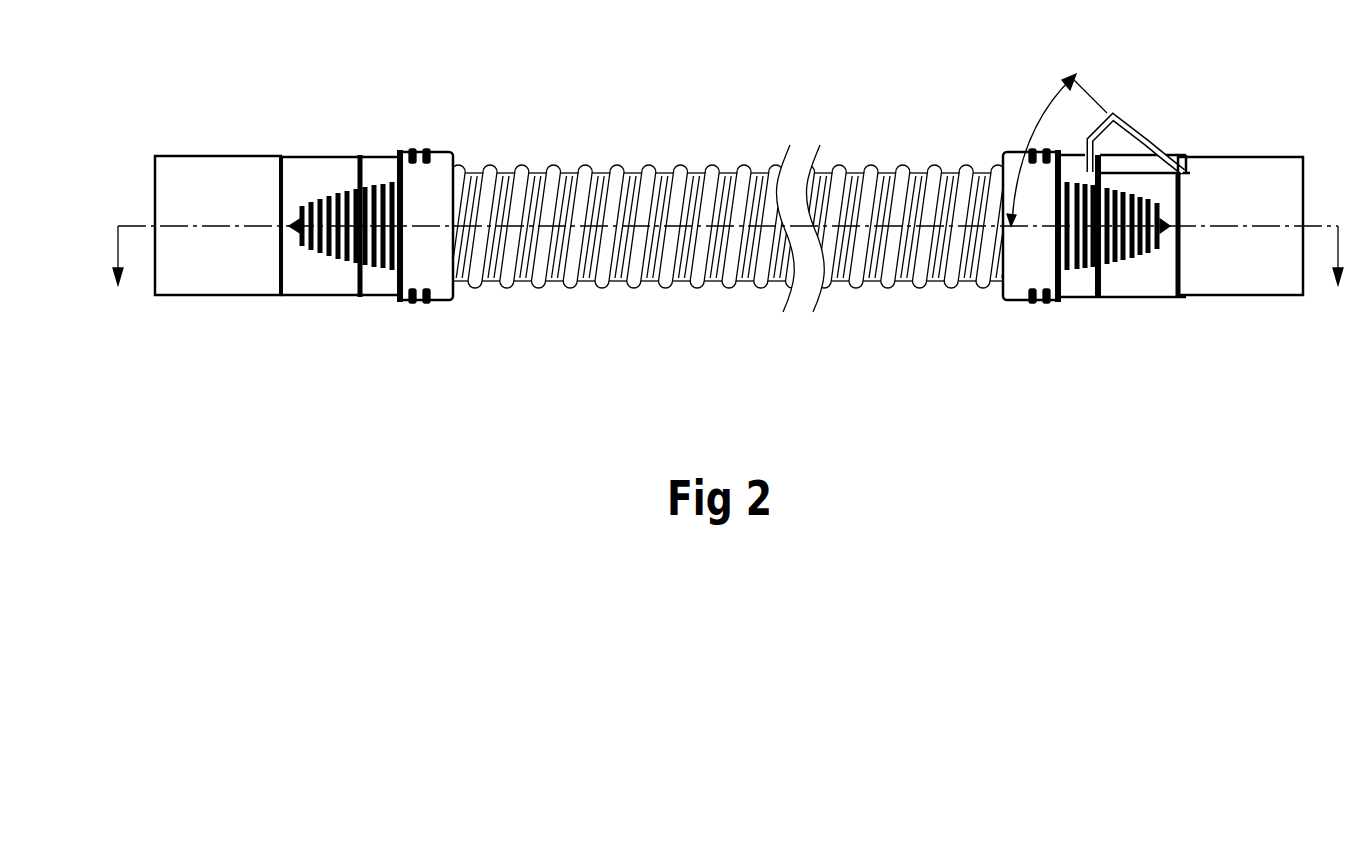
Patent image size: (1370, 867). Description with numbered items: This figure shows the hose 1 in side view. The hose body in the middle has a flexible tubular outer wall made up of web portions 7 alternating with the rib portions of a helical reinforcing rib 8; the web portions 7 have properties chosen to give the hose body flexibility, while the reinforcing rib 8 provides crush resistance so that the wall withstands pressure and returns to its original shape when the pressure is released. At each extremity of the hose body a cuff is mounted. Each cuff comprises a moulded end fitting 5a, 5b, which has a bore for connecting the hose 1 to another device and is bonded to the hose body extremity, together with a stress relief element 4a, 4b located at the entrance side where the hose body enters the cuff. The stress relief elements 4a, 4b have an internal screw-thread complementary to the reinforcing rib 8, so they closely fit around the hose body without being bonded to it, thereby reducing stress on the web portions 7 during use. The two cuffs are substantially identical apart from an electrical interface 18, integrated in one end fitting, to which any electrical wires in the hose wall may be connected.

The hose 1 is at (842, 394).
The stress relief element 4a is at (432, 270).
The stress relief element 4b is at (1015, 283).
The end fitting 5a is at (200, 270).
The end fitting 5b is at (1203, 282).
The web portions 7 is at (700, 172).
The helical reinforcing rib 8 is at (583, 168).
The electrical interface 18 is at (1145, 135).